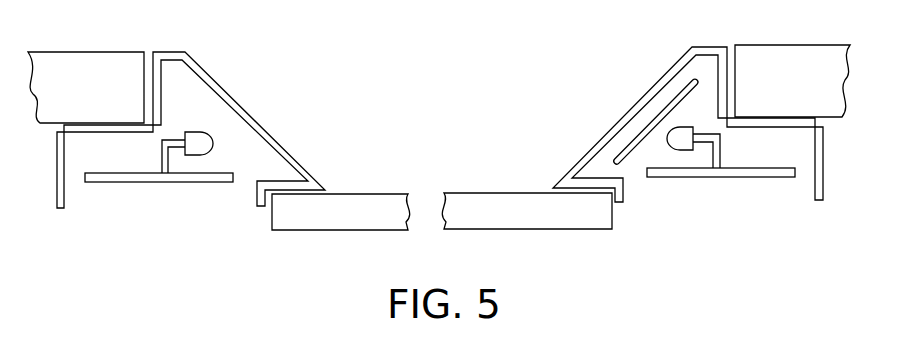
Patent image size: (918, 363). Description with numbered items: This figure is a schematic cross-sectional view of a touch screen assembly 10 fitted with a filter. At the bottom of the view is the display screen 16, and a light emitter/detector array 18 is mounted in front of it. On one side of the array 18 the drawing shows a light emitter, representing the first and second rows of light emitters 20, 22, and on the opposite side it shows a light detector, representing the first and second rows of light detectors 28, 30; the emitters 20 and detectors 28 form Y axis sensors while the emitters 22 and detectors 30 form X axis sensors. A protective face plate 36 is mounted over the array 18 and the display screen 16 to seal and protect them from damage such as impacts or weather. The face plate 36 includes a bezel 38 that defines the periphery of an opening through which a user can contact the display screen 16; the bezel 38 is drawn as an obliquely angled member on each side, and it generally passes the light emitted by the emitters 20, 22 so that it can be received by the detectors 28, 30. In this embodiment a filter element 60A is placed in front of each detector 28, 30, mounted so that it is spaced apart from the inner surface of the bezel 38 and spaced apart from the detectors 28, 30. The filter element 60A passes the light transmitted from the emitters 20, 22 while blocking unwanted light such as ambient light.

The touch screen assembly 10 is at (491, 80).
The display screen 16 is at (320, 232).
The light emitter/detector array 18 is at (137, 182).
The first row of light emitters 20 is at (245, 124).
The second row of light emitters 22 is at (213, 131).
The first row of light detectors 28 is at (721, 184).
The second row of light detectors 30 is at (683, 150).
The protective face plate 36 is at (84, 52).
The bezel 38 is at (182, 52).
The filter element 60A is at (647, 126).